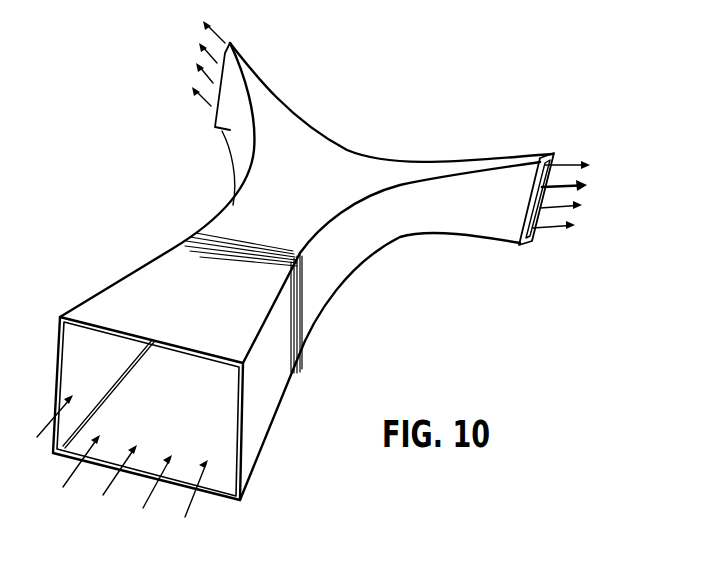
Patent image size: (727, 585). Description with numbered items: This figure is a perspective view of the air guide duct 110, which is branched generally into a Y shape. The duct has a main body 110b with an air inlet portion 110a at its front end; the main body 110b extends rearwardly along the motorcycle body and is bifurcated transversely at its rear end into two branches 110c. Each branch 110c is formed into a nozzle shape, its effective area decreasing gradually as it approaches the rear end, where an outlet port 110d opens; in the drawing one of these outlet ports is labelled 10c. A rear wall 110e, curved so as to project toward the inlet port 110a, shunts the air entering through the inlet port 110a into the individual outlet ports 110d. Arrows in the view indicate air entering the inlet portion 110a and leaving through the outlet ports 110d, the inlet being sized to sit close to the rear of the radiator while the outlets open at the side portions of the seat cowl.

The air guide duct 110 is at (150, 234).
The air inlet portion 110a is at (192, 332).
The main body 110b is at (311, 309).
The branch 110c is at (228, 128).
The side outlet opening 10c is at (495, 235).
The outlet port 110d is at (226, 50).
The rear wall 110e is at (343, 148).